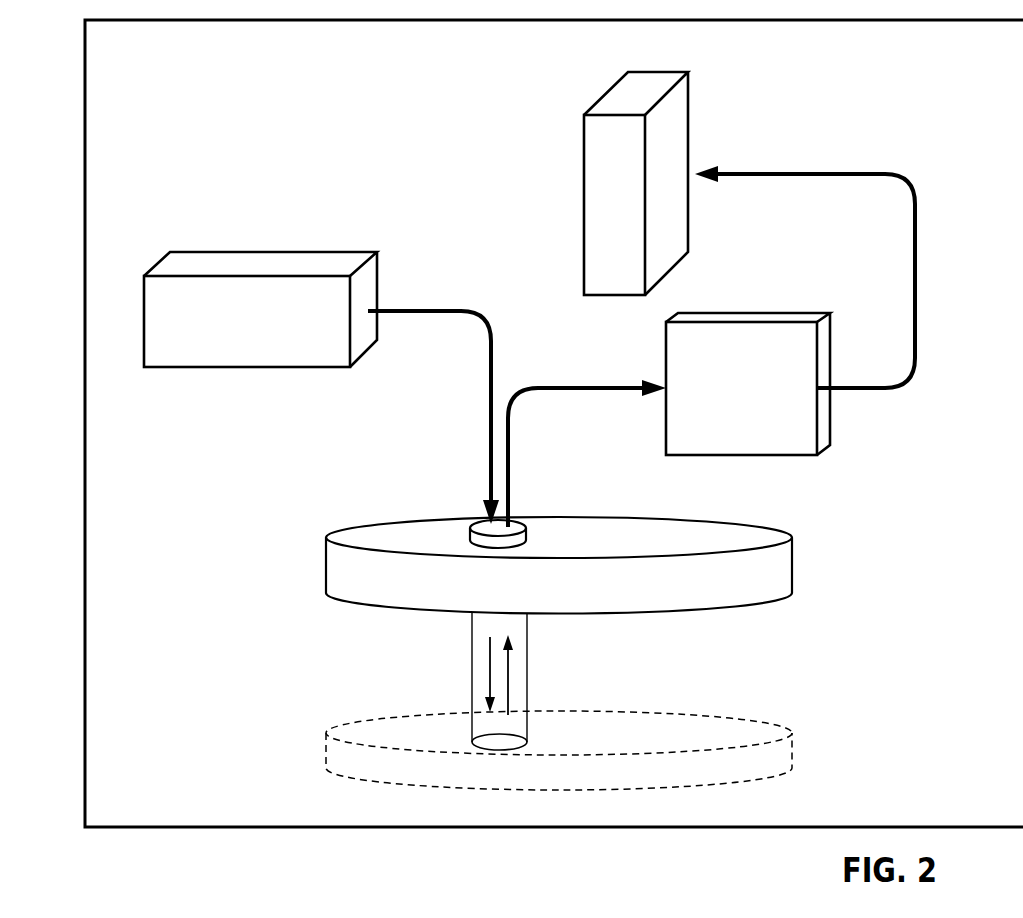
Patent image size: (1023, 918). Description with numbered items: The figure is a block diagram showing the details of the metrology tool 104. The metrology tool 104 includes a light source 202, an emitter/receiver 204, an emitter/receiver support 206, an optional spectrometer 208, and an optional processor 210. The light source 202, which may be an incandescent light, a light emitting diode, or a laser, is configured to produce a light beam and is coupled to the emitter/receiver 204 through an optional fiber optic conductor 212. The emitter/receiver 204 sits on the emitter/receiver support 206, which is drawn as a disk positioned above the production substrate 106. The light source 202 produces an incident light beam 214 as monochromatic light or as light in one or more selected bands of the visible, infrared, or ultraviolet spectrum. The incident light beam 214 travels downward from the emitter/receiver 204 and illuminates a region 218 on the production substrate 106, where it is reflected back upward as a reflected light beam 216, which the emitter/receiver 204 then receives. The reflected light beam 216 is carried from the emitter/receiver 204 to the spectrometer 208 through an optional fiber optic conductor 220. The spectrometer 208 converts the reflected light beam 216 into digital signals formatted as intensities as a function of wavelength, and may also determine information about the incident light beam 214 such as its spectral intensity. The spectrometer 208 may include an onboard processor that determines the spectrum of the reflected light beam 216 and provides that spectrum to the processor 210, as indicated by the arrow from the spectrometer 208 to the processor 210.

The metrology tool 104 is at (179, 109).
The light source 202 is at (246, 252).
The processor 210 is at (584, 205).
The spectrometer 208 is at (803, 455).
The fiber optic conductor 212 is at (491, 383).
The fiber optic conductor 220 is at (508, 457).
The emitter/receiver 204 is at (470, 530).
The emitter/receiver support 206 is at (326, 570).
The incident light beam 214 is at (490, 652).
The reflected light beam 216 is at (508, 668).
The region 218 is at (473, 743).
The production substrate 106 is at (704, 754).